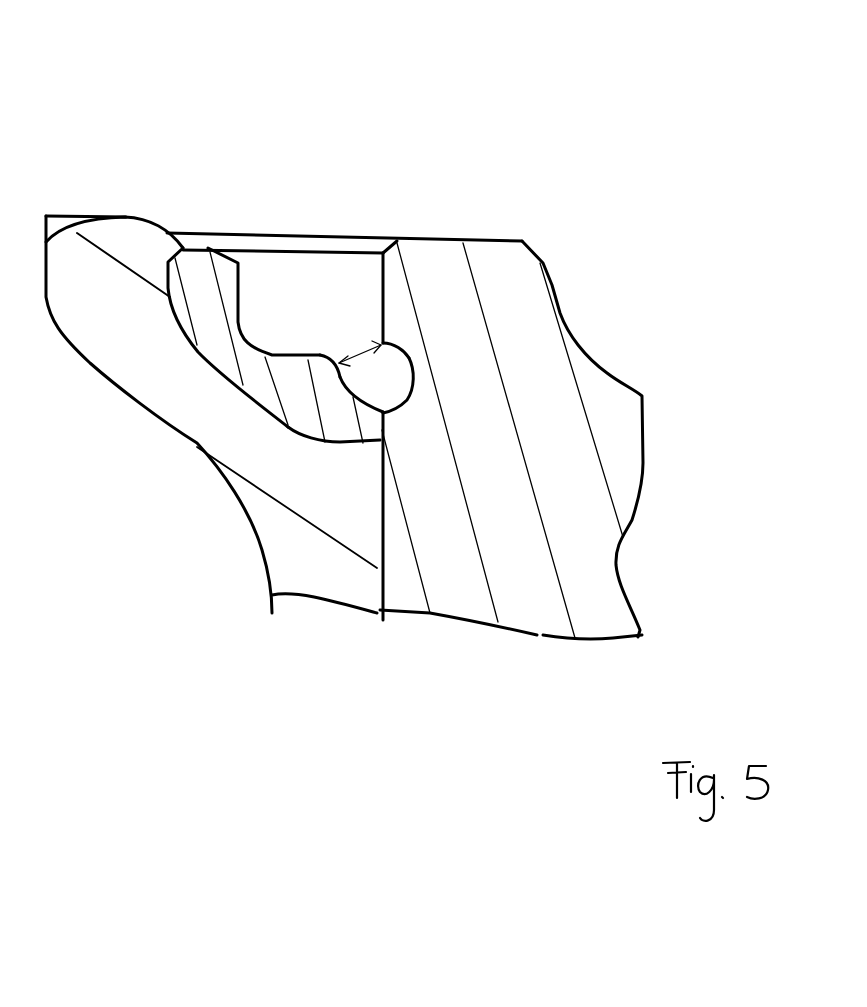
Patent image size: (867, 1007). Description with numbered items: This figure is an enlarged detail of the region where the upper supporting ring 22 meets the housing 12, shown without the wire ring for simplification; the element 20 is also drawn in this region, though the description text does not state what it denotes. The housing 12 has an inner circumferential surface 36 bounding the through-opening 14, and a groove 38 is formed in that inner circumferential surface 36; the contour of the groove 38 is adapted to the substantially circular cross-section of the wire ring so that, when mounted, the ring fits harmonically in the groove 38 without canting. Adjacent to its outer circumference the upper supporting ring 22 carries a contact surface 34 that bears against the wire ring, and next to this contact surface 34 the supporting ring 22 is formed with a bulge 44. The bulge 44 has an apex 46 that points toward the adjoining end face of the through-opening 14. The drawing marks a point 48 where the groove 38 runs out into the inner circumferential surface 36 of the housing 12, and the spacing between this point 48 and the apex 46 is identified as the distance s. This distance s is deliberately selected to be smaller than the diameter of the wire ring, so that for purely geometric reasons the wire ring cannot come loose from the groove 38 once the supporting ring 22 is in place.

The housing 12 is at (443, 267).
The through-opening 14 is at (357, 277).
The cover part 20 is at (100, 287).
The upper supporting ring 22 is at (200, 275).
The contact surface 34 is at (367, 407).
The inner circumferential surface 36 is at (380, 287).
The groove 38 is at (413, 358).
The bulge 44 is at (330, 372).
The apex 46 is at (333, 357).
The point 48 is at (387, 338).
The distance s is at (361, 360).